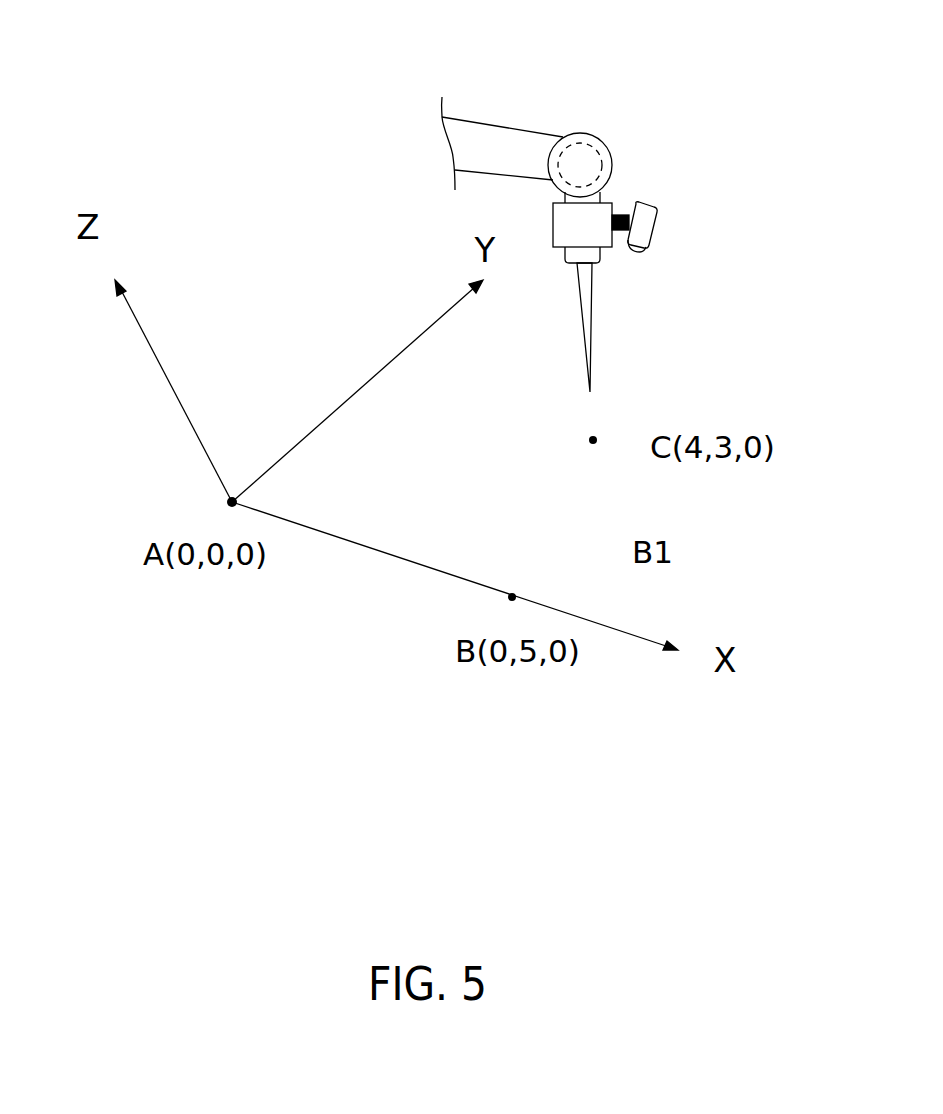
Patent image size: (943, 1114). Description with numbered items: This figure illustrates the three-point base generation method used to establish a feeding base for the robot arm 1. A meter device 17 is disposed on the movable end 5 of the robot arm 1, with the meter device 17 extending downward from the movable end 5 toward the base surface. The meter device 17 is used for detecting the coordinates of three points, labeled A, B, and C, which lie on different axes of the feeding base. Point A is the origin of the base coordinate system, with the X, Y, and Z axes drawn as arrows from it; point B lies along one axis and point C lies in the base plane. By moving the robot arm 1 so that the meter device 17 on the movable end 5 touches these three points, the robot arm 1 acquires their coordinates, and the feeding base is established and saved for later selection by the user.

The robot arm 1 is at (512, 120).
The movable end 5 is at (613, 210).
The meter device 17 is at (592, 318).